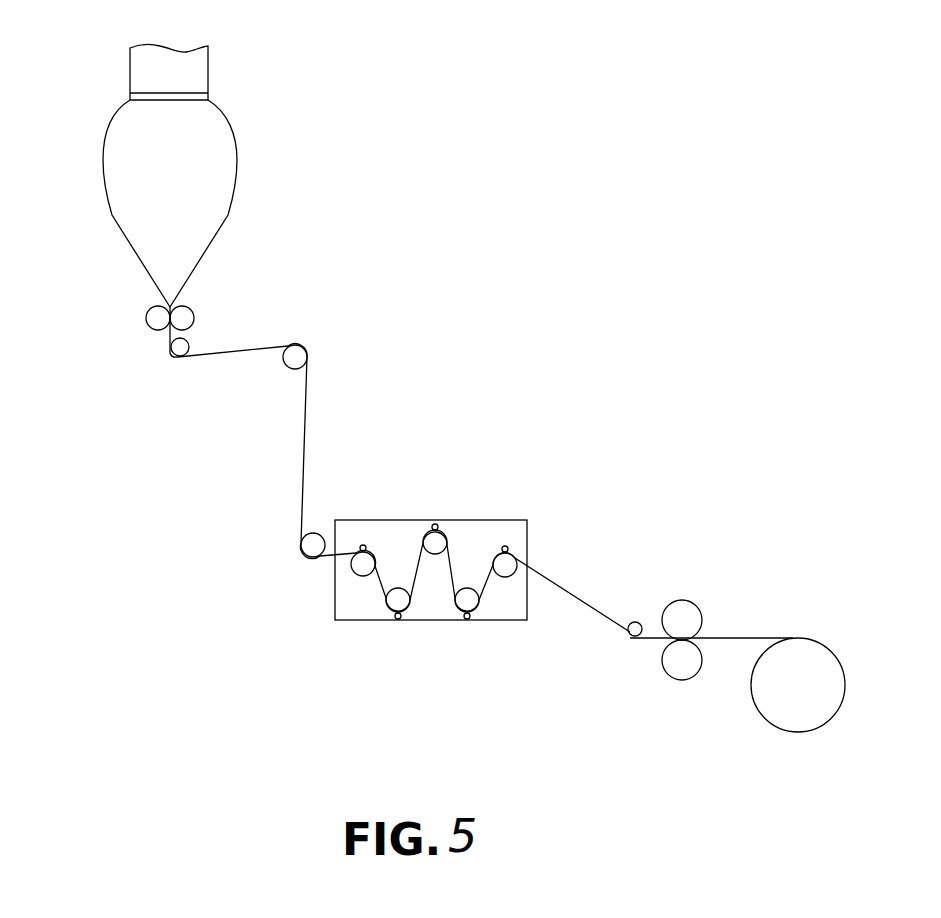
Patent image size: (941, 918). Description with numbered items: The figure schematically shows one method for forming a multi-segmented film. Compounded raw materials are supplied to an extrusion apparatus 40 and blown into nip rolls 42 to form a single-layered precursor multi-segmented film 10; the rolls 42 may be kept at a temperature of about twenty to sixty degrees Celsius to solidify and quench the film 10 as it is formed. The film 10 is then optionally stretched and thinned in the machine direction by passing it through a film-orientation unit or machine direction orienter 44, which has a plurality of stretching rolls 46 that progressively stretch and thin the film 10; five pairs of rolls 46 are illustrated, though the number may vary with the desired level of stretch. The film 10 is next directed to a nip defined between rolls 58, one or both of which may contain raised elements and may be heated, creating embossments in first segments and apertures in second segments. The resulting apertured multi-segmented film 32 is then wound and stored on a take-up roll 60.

The precursor multi-segmented film 10 is at (240, 350).
The apertured multi-segmented film 32 is at (763, 637).
The extrusion apparatus 40 is at (193, 72).
The nip rolls 42 is at (147, 313).
The machine direction orienter 44 is at (471, 500).
The stretching rolls 46 is at (362, 546).
The rolls 58 is at (702, 610).
The take-up roll 60 is at (848, 690).